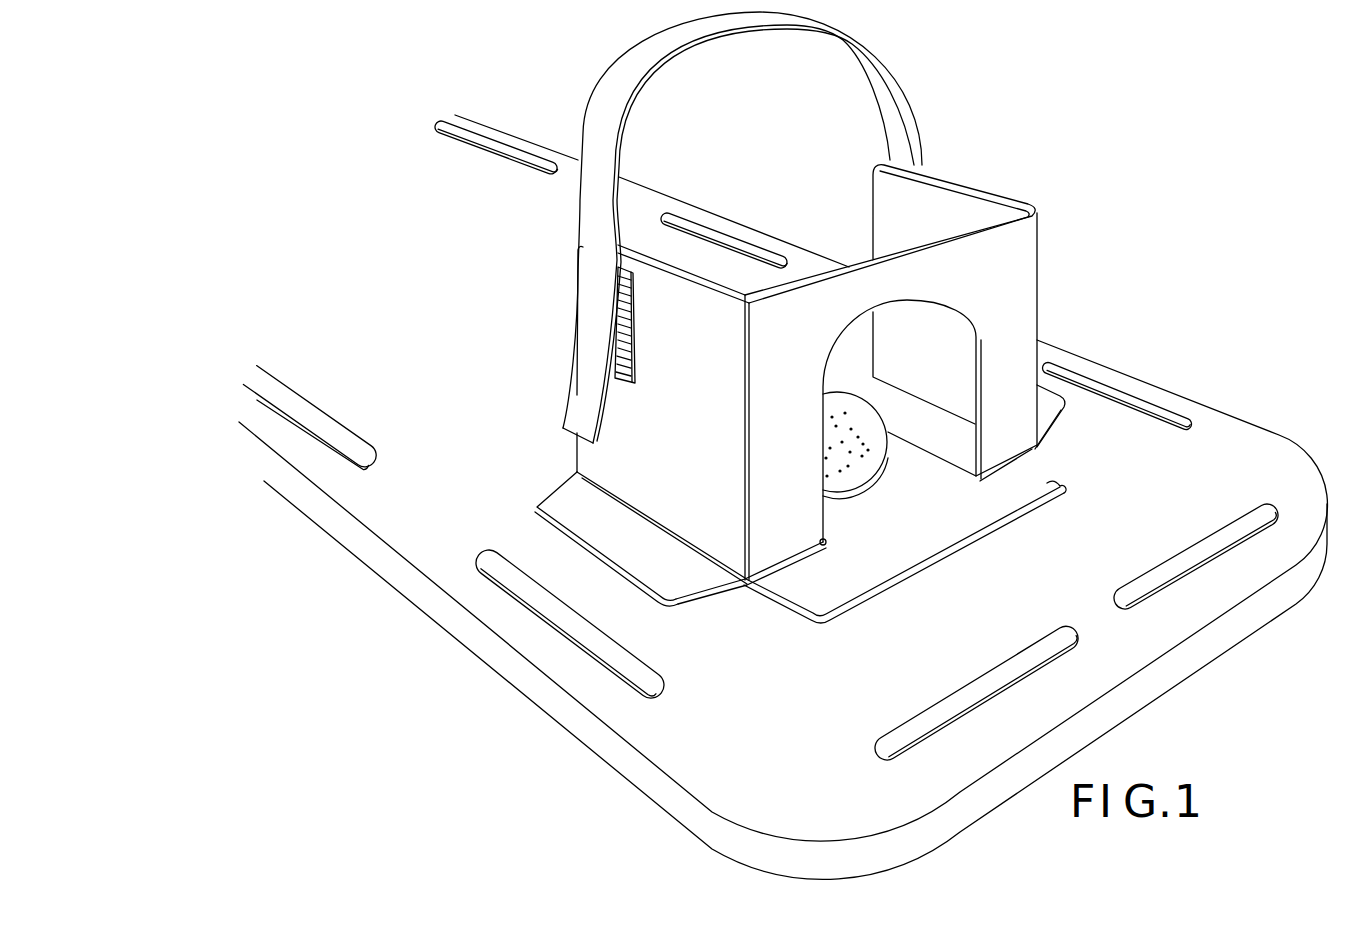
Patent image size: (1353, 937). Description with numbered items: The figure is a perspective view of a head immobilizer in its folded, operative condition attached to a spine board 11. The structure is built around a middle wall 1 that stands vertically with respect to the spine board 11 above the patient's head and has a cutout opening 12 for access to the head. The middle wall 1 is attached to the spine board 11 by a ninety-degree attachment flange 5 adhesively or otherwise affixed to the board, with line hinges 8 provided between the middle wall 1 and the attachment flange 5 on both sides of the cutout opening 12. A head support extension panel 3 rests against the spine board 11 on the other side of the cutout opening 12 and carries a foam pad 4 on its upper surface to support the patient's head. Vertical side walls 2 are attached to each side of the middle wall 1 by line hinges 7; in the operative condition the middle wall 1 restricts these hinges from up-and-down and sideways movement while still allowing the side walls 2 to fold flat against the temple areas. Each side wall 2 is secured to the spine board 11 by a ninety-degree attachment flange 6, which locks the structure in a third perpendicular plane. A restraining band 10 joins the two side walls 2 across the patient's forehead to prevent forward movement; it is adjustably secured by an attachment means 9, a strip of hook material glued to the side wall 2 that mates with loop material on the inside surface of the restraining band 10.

The middle wall 1 is at (1015, 270).
The side walls 2 is at (688, 297).
The head support extension panel 3 is at (912, 462).
The foam pad 4 is at (843, 420).
The attachment flange 5 is at (993, 512).
The attachment flanges 6 is at (568, 500).
The line hinges 7 is at (742, 450).
The line hinges 8 is at (778, 563).
The attachment means 9 is at (627, 347).
The restraining band 10 is at (592, 215).
The spine board 11 is at (1233, 440).
The cutout opening 12 is at (853, 357).